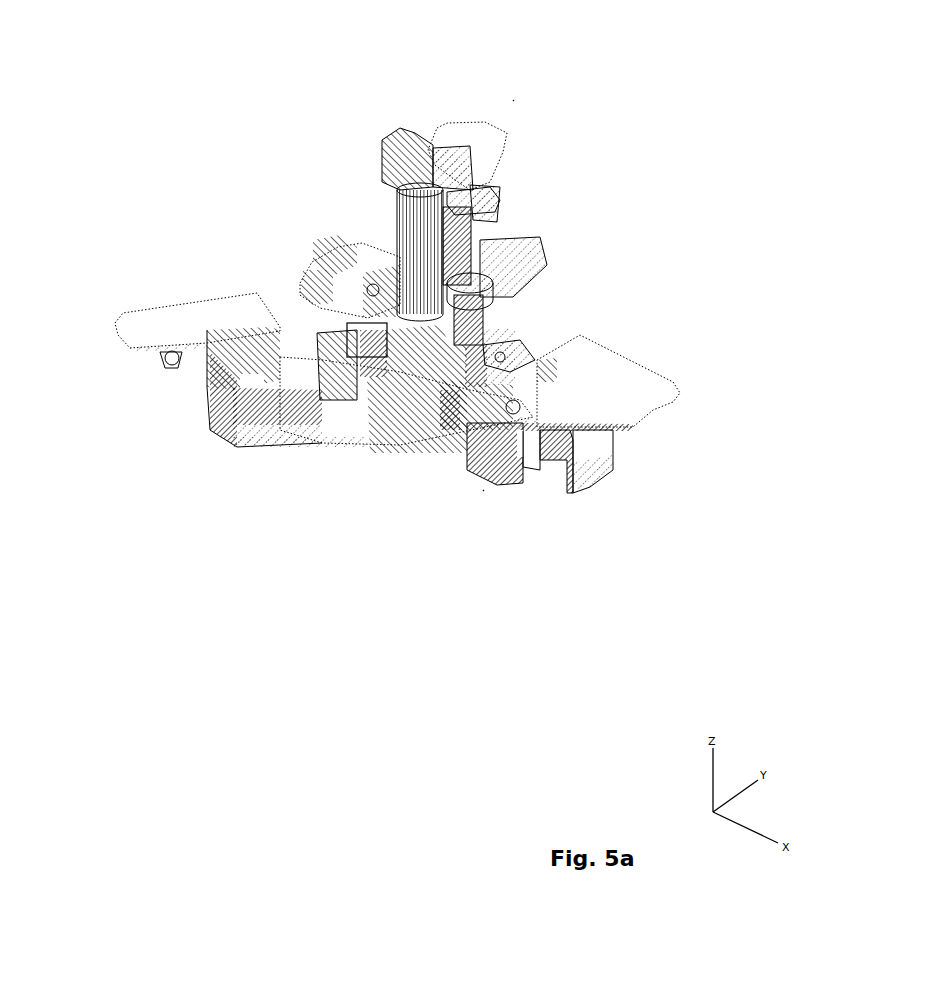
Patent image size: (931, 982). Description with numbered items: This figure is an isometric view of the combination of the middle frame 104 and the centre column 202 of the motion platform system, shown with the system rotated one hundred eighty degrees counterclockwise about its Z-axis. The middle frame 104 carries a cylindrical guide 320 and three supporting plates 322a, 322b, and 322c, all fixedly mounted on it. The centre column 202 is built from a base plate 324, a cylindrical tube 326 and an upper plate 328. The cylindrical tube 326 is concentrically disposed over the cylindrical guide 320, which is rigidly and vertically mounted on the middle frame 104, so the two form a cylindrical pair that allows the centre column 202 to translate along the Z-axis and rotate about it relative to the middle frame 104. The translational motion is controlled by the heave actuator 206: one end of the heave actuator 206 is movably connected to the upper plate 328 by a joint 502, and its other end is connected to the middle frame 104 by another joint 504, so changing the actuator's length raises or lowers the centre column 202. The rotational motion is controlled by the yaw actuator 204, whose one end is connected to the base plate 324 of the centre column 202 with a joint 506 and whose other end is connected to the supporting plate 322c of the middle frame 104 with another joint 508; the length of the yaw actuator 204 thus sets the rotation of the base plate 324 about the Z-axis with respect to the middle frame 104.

The middle frame 104 is at (486, 493).
The centre column 202 is at (516, 96).
The yaw actuator 204 is at (445, 408).
The heave actuator 206 is at (487, 310).
The cylindrical guide 320 is at (420, 358).
The supporting plate 322a is at (223, 330).
The supporting plate 322b is at (470, 120).
The supporting plate 322c is at (632, 402).
The base plate 324 is at (347, 287).
The cylindrical tube 326 is at (399, 220).
The upper plate 328 is at (467, 187).
The joint 502 is at (483, 226).
The joint 504 is at (497, 362).
The joint 506 is at (337, 378).
The joint 508 is at (510, 422).